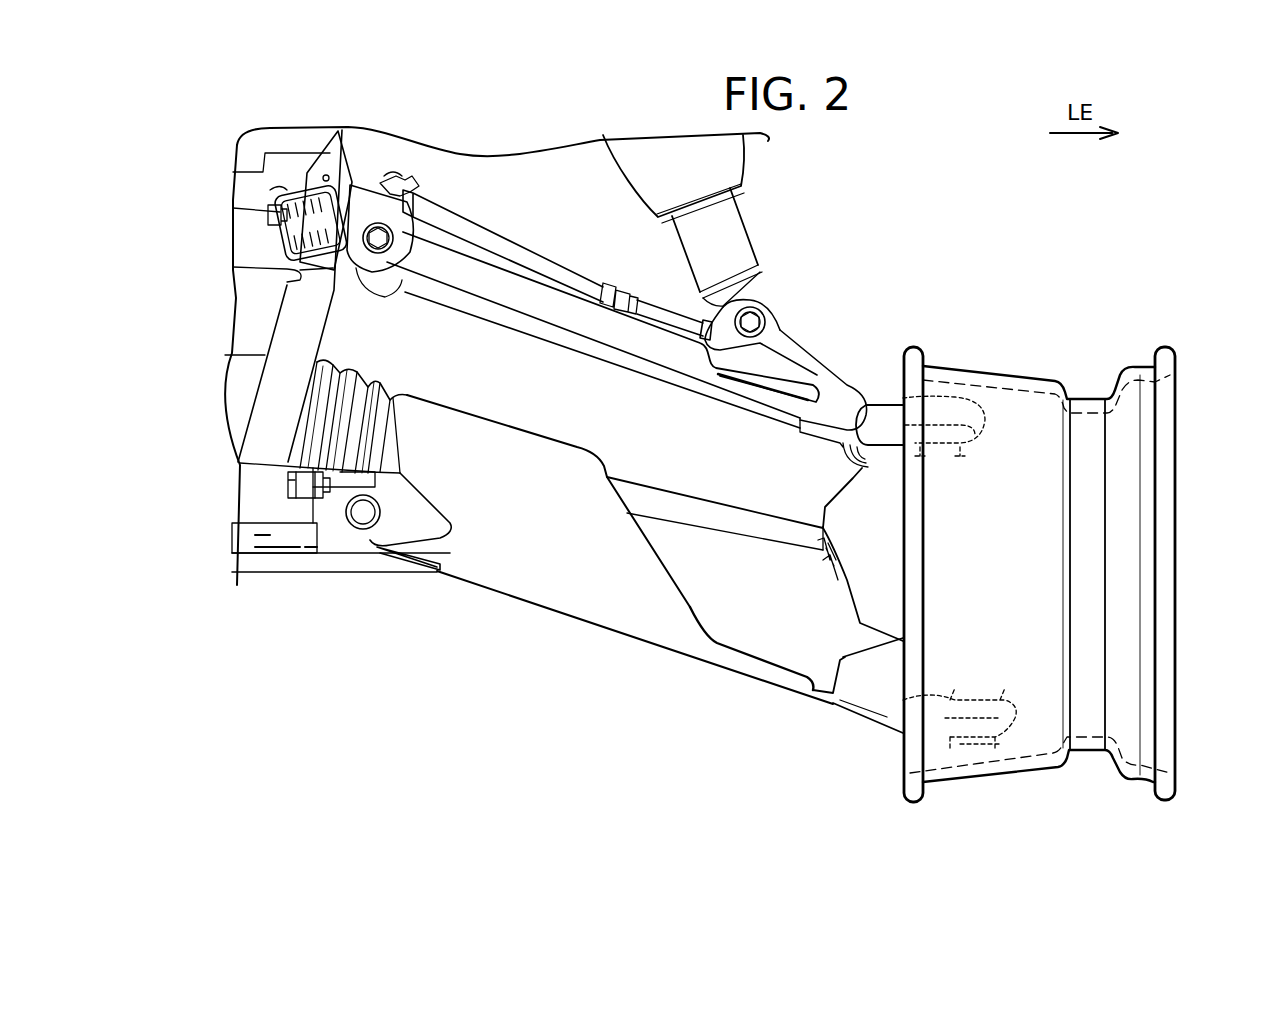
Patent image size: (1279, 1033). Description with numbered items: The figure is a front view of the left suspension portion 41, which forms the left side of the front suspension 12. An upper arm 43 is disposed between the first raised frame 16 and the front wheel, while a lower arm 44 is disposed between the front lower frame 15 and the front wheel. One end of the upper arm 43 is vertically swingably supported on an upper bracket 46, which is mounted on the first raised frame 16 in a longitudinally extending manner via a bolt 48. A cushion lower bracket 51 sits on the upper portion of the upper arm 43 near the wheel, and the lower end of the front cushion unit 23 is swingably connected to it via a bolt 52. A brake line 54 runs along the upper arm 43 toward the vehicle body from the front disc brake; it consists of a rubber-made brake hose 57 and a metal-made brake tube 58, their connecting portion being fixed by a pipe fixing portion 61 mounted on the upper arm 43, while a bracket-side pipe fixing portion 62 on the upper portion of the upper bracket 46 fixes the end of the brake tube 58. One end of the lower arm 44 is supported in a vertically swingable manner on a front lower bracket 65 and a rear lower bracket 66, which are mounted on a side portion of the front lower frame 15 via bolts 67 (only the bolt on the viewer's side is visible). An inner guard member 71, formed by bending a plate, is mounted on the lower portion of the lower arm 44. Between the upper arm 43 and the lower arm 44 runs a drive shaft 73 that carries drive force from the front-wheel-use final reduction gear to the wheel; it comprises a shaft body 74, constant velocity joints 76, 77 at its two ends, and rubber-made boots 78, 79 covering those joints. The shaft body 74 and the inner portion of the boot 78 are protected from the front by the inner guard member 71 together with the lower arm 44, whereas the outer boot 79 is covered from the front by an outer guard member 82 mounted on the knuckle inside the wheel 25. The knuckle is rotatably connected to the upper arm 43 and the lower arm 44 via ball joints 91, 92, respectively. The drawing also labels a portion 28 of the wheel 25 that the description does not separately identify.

The front suspension 12 is at (405, 703).
The front lower frame 15 is at (290, 542).
The first raised frame 16 is at (285, 340).
The front cushion unit 23 is at (735, 160).
The wheel 25 is at (1083, 550).
The rim 28 is at (1025, 378).
The left suspension portion 41 is at (476, 708).
The upper arm 43 is at (862, 382).
The lower arm 44 is at (835, 590).
The upper bracket 46 is at (380, 204).
The bolt 48 is at (372, 226).
The cushion lower bracket 51 is at (775, 355).
The bolt 52 is at (752, 320).
The brake line 54 is at (550, 244).
The brake hose 57 is at (662, 305).
The brake tube 58 is at (488, 250).
The pipe fixing portion 61 is at (612, 283).
The bracket-side pipe fixing portion 62 is at (400, 172).
The front lower bracket 65 is at (340, 488).
The rear lower bracket 66 is at (365, 530).
The bolt 67 is at (410, 570).
The inner guard member 71 is at (587, 613).
The drive shaft 73 is at (745, 600).
The shaft body 74 is at (720, 520).
The constant velocity joint 76 is at (240, 415).
The constant velocity joint 77 is at (754, 552).
The boot 78 is at (295, 500).
The boot 79 is at (824, 700).
The outer guard member 82 is at (887, 652).
The ball joint 91 is at (952, 395).
The ball joint 92 is at (975, 755).